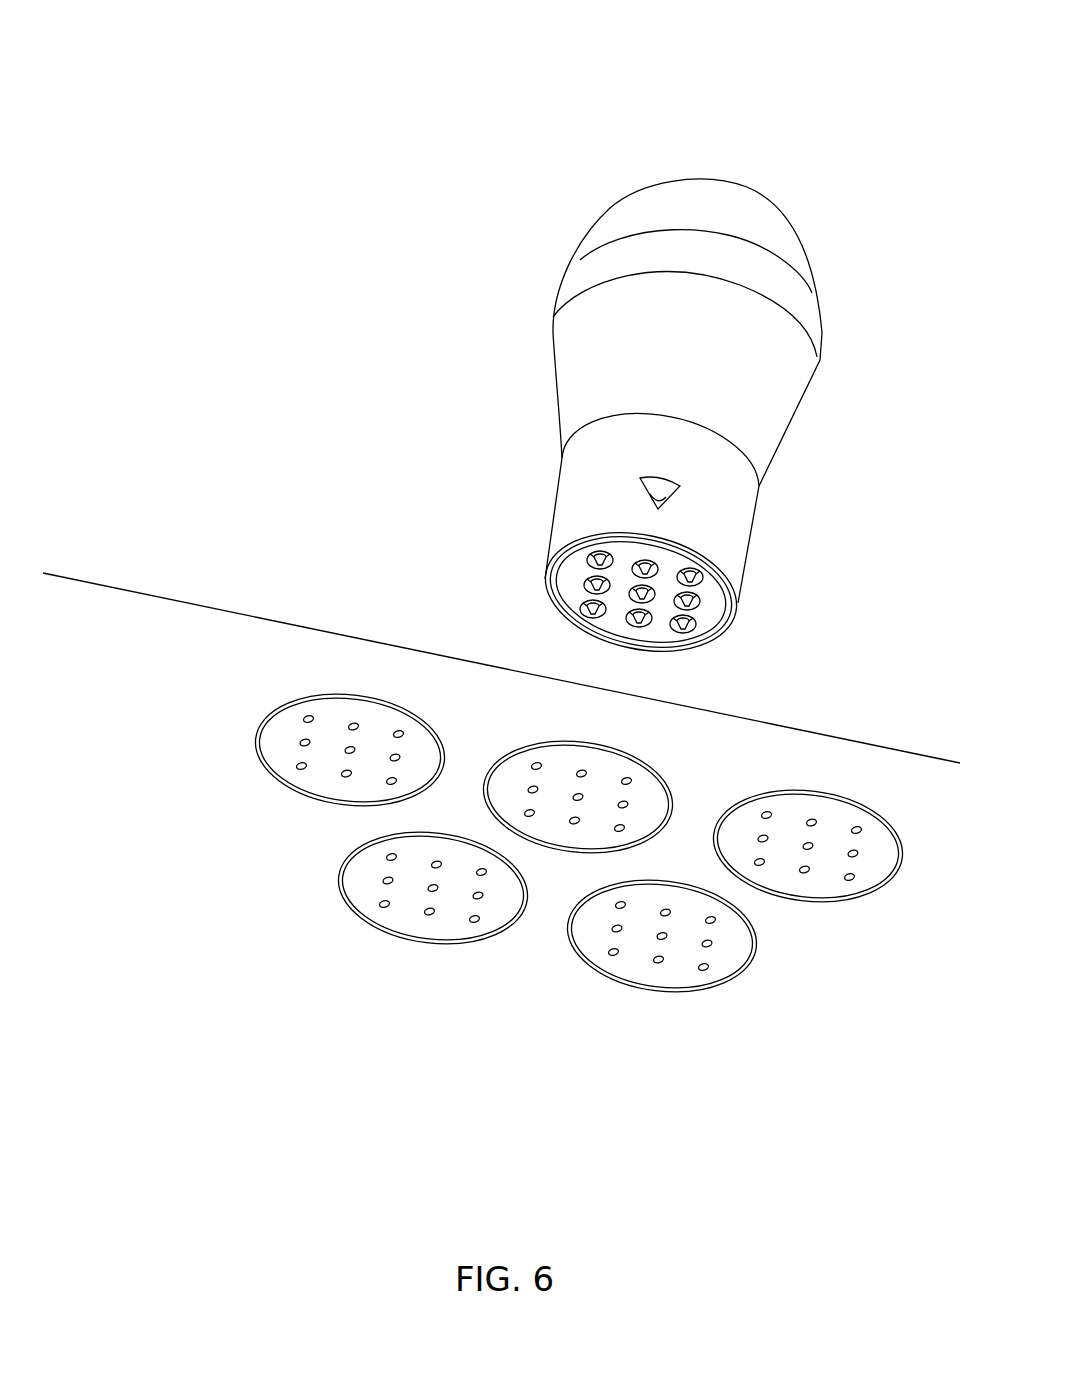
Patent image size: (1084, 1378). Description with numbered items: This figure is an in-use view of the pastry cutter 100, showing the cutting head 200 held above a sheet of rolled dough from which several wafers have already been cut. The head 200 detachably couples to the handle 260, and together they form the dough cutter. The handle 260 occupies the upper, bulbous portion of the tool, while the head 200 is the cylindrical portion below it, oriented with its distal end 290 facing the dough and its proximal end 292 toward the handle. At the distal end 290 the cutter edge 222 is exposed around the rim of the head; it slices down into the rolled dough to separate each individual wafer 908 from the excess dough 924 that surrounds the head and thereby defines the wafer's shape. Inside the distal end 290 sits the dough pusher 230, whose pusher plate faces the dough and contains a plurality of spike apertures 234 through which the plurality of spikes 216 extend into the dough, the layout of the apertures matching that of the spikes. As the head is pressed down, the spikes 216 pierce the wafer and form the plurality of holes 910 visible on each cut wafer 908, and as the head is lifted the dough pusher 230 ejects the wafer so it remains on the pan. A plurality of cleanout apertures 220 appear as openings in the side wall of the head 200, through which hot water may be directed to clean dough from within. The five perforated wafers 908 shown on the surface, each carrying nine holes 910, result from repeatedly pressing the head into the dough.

The pastry cutter 100 is at (148, 192).
The head 200 is at (847, 480).
The plurality of spikes 216 is at (583, 605).
The plurality of cleanout apertures 220 is at (640, 480).
The cutter edge 222 is at (713, 642).
The dough pusher 230 is at (610, 625).
The plurality of spike apertures 234 is at (660, 567).
The handle 260 is at (920, 194).
The distal end 290 is at (373, 529).
The proximal end 292 is at (578, 162).
The individual wafer 908 is at (453, 922).
The plurality of holes 910 is at (432, 891).
The excess dough 924 is at (150, 657).